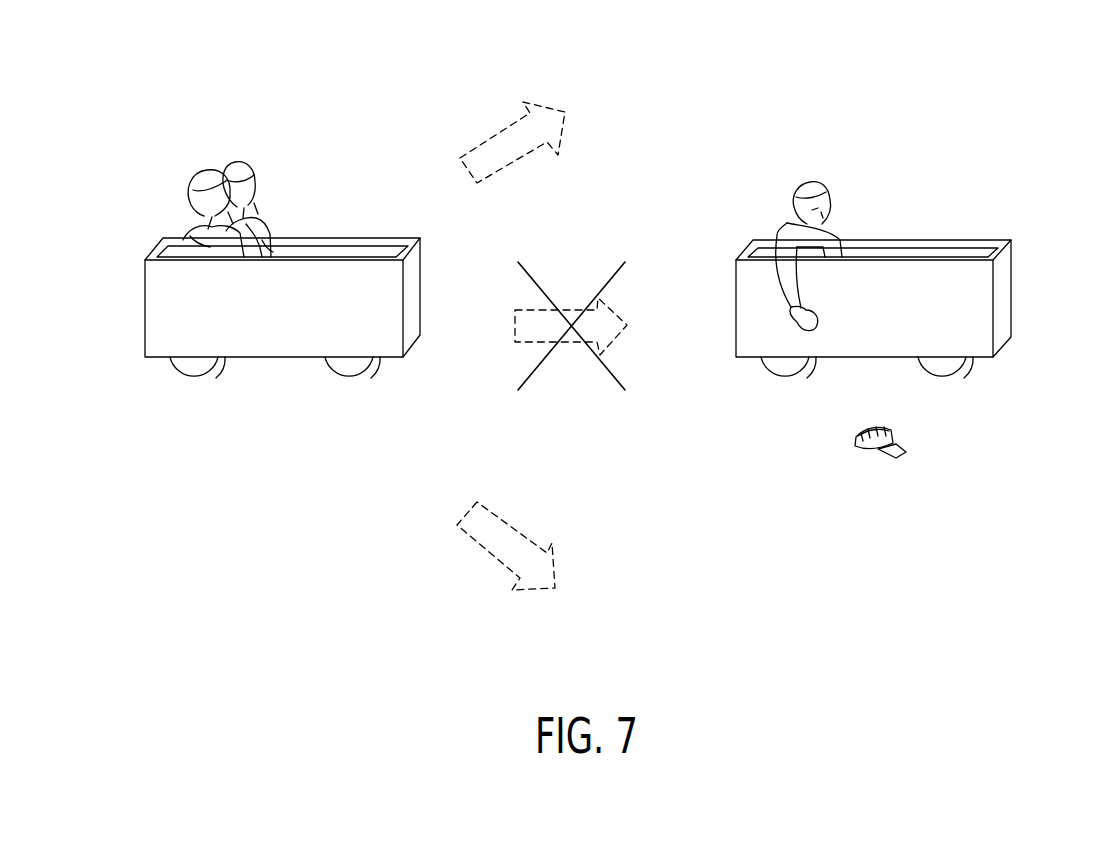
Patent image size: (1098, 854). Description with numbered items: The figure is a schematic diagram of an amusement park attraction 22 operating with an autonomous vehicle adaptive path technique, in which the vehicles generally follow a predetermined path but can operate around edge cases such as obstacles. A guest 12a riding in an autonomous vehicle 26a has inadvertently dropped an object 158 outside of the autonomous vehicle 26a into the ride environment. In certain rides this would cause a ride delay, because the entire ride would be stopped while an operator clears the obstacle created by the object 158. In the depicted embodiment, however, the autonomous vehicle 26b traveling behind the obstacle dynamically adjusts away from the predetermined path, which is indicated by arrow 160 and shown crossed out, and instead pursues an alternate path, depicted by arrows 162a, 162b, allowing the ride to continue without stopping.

The attraction 22 is at (125, 73).
The autonomous vehicle 26b is at (143, 310).
The autonomous vehicle 26a is at (1013, 292).
The guest 12a is at (808, 180).
The object 158 is at (893, 457).
The arrow 160 is at (515, 323).
The arrow 162b is at (498, 137).
The arrow 162a is at (490, 555).